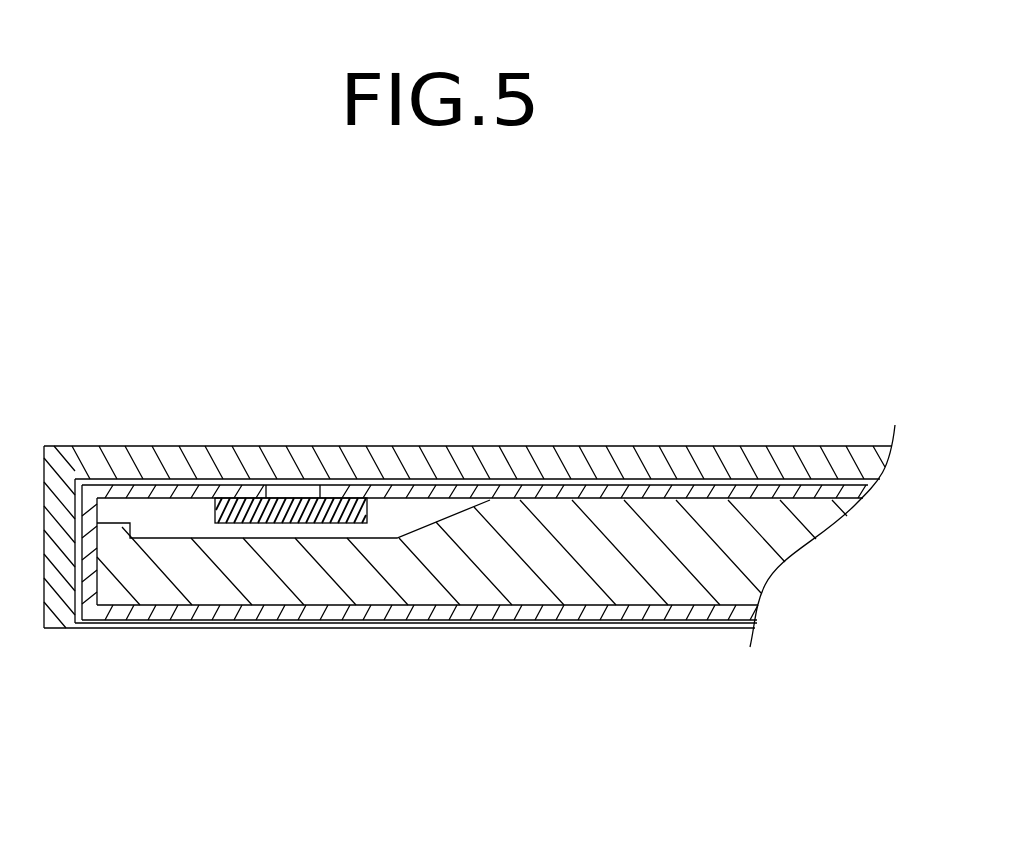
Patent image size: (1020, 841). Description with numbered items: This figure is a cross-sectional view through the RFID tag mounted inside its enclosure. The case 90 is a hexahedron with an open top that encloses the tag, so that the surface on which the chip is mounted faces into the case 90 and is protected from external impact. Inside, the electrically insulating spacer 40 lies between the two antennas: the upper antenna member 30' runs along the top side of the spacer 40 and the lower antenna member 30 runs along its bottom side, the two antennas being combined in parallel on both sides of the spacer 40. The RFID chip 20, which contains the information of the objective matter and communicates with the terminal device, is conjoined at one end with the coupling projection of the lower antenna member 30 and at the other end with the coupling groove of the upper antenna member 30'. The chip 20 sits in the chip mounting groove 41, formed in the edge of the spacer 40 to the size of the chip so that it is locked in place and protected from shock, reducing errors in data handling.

The case 90 is at (225, 445).
The RFID chip 20 is at (292, 503).
The upper antenna member 30' is at (475, 479).
The lower antenna member 30 is at (420, 707).
The spacer 40 is at (302, 570).
The chip mounting groove 41 is at (157, 522).